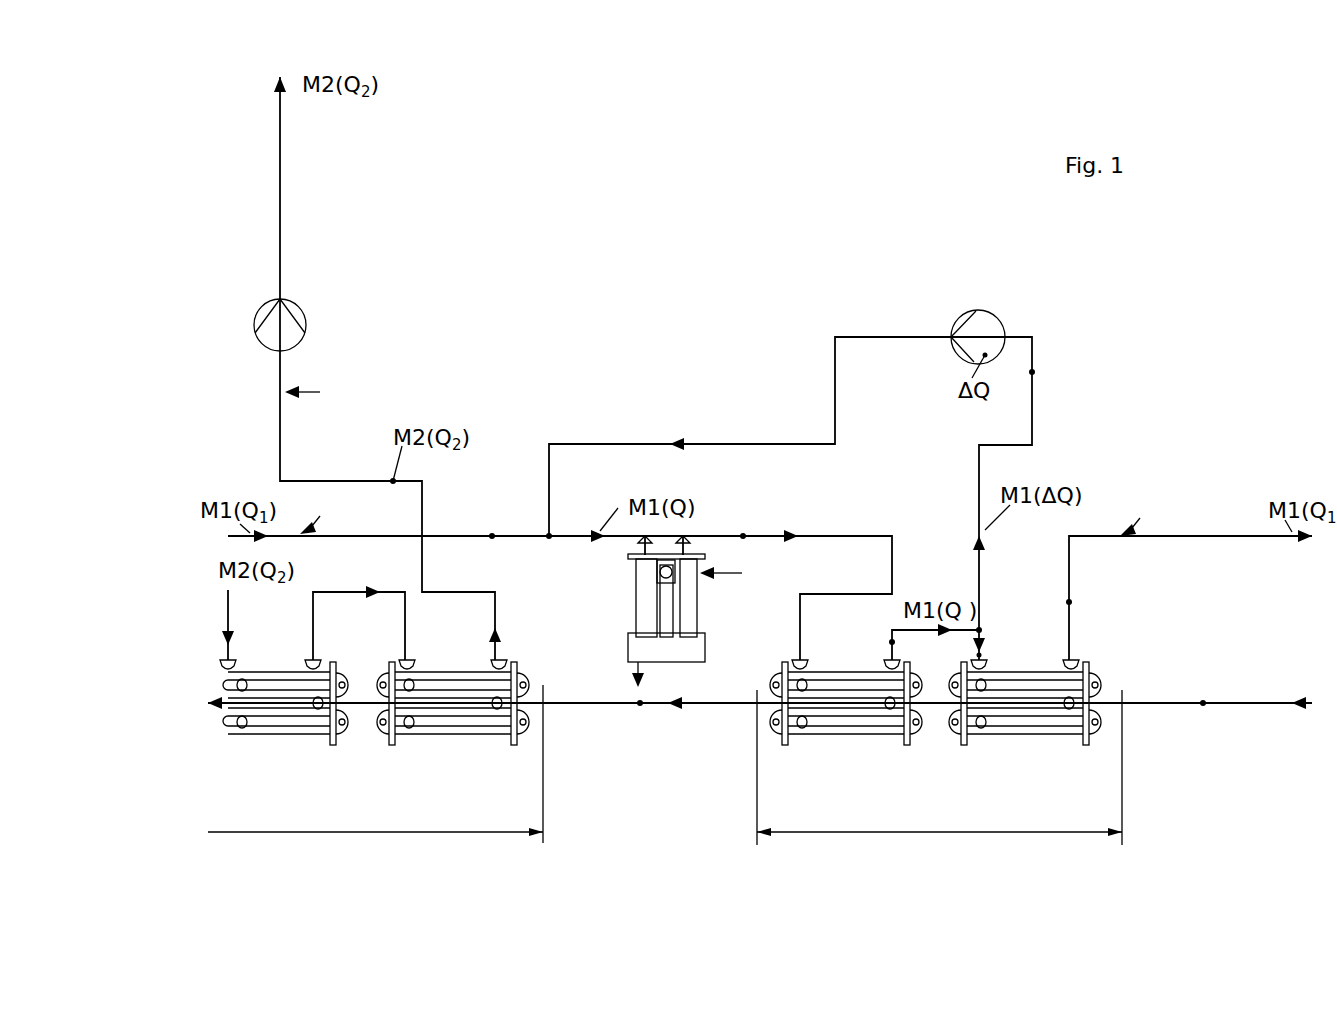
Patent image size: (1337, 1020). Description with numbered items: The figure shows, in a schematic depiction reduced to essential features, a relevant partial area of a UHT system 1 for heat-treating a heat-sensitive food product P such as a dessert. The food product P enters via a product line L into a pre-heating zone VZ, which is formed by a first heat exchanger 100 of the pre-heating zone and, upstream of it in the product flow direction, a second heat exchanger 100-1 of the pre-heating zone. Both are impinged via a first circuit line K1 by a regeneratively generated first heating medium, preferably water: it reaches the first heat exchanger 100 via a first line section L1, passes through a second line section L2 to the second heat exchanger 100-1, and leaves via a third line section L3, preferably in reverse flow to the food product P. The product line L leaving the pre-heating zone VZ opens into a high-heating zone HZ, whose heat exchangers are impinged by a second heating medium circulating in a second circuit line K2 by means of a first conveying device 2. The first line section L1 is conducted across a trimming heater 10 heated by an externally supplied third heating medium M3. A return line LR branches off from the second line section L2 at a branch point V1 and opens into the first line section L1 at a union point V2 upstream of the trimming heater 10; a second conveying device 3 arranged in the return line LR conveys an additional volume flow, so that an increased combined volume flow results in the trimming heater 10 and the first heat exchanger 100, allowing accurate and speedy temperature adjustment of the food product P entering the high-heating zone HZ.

The UHT system 1 is at (692, 352).
The first conveying device 2 is at (290, 320).
The second conveying device 3 is at (982, 330).
The trimming heater 10 is at (683, 600).
The first heat exchanger of the pre-heating zone 100 is at (845, 703).
The second heat exchanger of the pre-heating zone 100-1 is at (1025, 713).
The first line section L1 is at (492, 536).
The second line section L2 is at (892, 642).
The third line section L3 is at (1069, 602).
The branch point V1 is at (979, 630).
The union point V2 is at (552, 554).
The return line LR is at (1032, 372).
The first circuit line K1 is at (766, 517).
The second circuit line K2 is at (256, 618).
The third heating medium M3 is at (616, 678).
The product line L is at (640, 705).
The food product P is at (1298, 712).
The high-heating zone HZ is at (375, 764).
The pre-heating zone VZ is at (939, 767).